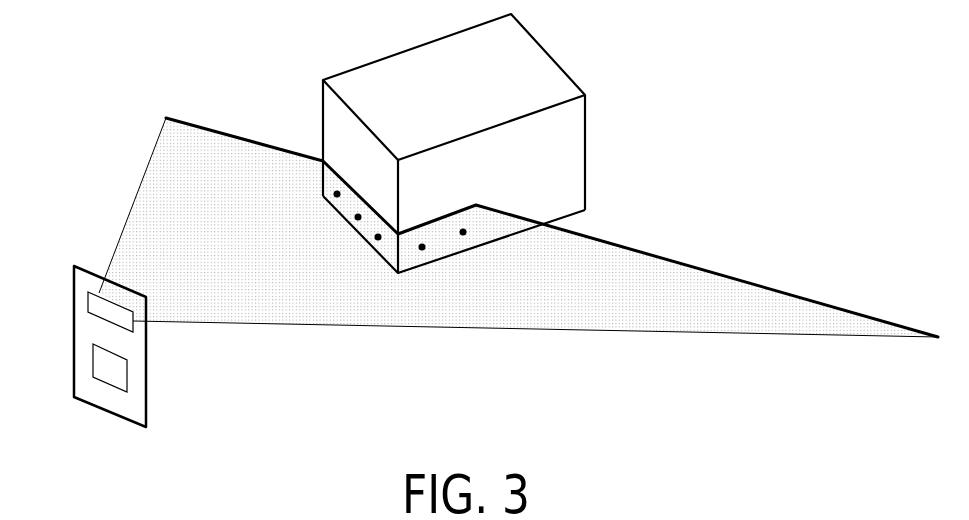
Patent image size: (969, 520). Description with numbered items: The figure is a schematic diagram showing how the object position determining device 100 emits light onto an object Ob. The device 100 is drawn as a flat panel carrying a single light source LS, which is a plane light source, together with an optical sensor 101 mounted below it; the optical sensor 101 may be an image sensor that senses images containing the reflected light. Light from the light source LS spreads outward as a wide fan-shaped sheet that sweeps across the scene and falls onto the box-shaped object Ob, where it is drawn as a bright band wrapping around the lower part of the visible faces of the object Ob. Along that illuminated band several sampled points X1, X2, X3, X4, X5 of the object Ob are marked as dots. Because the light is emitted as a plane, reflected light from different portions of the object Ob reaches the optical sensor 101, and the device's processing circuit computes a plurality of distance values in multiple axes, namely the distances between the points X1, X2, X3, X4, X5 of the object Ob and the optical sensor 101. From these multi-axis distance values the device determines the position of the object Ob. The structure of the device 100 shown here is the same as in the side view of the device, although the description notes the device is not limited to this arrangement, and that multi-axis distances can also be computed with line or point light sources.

The object position determining device 100 is at (100, 407).
The optical sensor 101 is at (127, 377).
The light source LS is at (88, 307).
The object Ob is at (530, 65).
The point of the object X1 is at (333, 190).
The point of the object X2 is at (358, 213).
The point of the object X3 is at (378, 233).
The point of the object X4 is at (422, 243).
The point of the object X5 is at (465, 230).